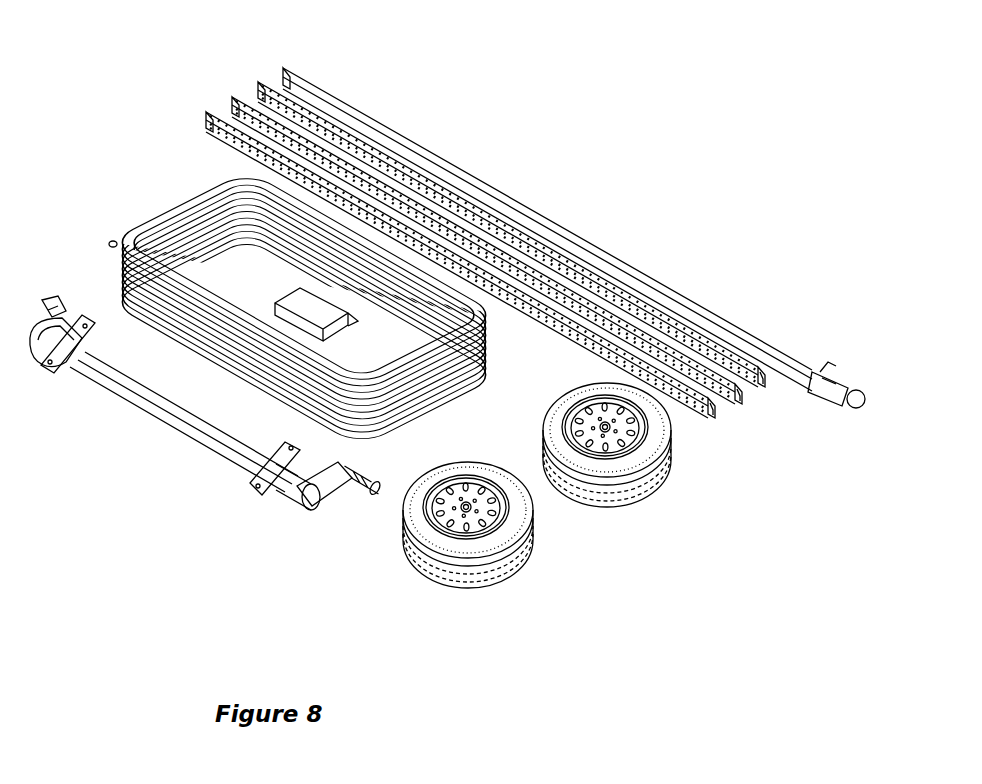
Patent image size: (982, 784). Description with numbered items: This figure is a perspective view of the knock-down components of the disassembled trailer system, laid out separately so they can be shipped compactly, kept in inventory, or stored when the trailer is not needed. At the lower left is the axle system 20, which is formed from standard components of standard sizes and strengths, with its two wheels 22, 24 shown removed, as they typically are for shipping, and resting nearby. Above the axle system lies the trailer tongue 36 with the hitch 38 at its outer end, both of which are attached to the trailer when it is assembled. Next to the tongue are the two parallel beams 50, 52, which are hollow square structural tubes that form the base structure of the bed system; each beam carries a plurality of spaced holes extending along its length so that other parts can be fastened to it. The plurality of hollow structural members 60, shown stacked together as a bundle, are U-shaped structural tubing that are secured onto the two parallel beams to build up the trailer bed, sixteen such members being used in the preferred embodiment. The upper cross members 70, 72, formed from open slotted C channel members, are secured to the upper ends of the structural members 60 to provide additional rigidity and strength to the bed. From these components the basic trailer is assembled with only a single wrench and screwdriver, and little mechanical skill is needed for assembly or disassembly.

The axle system 20 is at (170, 448).
The wheel 22 is at (527, 562).
The wheel 24 is at (667, 497).
The trailer tongue 36 is at (580, 222).
The hitch 38 is at (830, 353).
The beam 50 is at (713, 410).
The beam 52 is at (747, 395).
The hollow structural members 60 is at (118, 212).
The upper cross member 70 is at (495, 251).
The upper cross member 72 is at (265, 87).